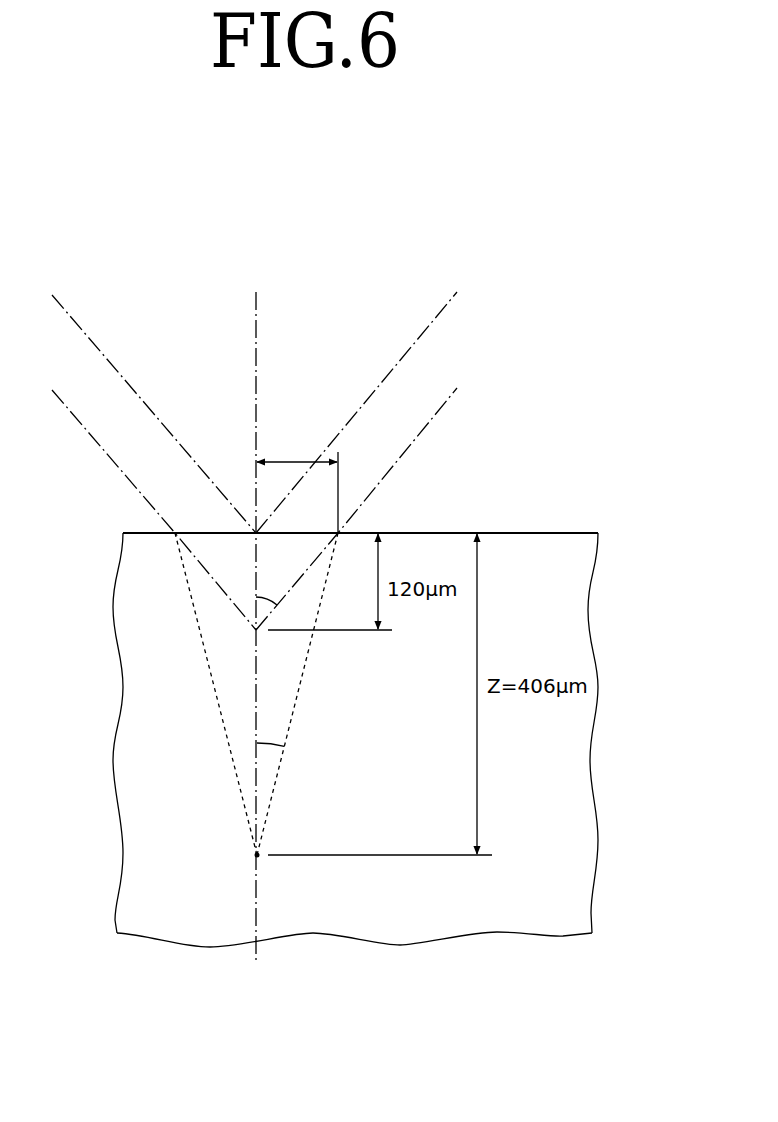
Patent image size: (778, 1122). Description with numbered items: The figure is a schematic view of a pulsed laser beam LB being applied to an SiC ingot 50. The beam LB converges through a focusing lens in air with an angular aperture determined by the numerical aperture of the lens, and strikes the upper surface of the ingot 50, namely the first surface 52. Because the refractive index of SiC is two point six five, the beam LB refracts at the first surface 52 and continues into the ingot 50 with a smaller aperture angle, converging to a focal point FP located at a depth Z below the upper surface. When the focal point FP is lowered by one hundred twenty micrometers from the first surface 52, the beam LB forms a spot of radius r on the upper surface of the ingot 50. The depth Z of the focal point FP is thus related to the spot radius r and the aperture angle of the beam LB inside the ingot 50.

The pulsed laser beam LB is at (98, 443).
The first surface 52 is at (493, 533).
The ingot 50 is at (561, 530).
The focal point FP is at (264, 852).
The radius of spot r is at (297, 484).